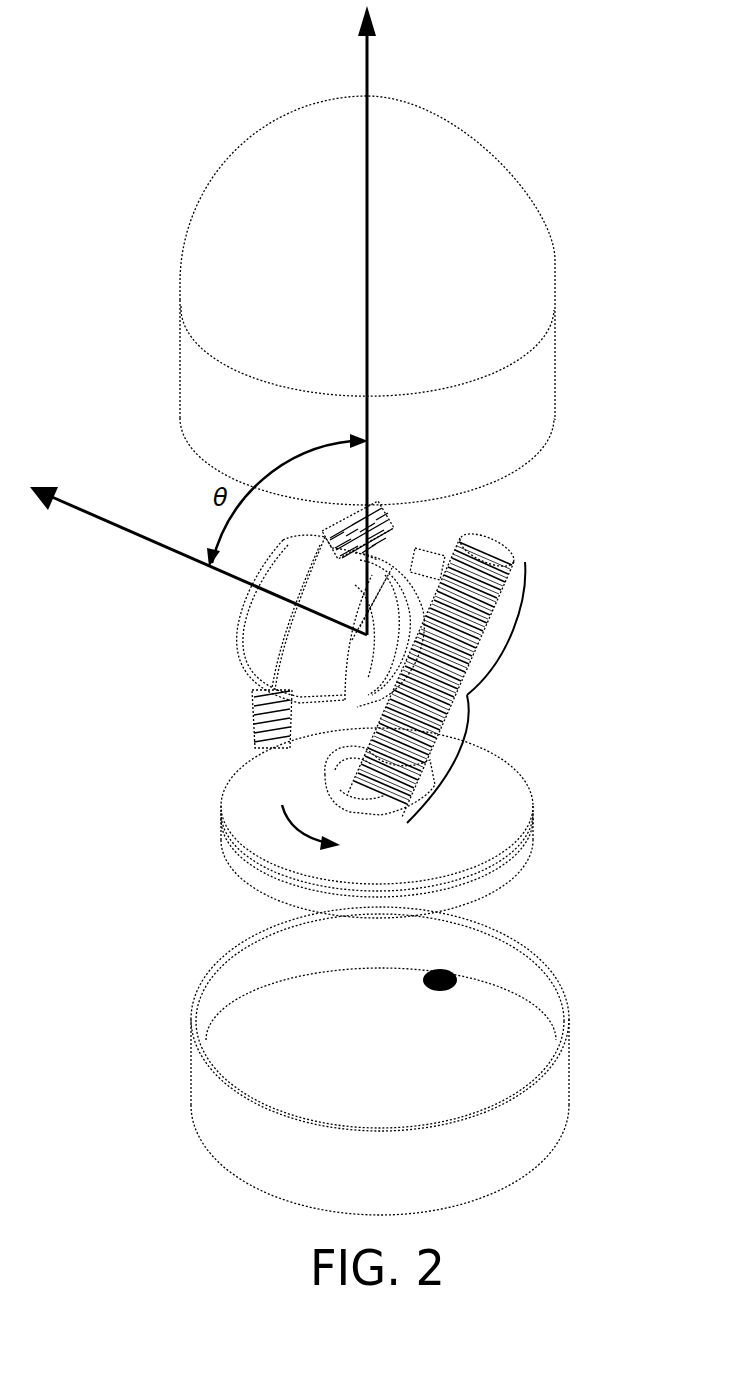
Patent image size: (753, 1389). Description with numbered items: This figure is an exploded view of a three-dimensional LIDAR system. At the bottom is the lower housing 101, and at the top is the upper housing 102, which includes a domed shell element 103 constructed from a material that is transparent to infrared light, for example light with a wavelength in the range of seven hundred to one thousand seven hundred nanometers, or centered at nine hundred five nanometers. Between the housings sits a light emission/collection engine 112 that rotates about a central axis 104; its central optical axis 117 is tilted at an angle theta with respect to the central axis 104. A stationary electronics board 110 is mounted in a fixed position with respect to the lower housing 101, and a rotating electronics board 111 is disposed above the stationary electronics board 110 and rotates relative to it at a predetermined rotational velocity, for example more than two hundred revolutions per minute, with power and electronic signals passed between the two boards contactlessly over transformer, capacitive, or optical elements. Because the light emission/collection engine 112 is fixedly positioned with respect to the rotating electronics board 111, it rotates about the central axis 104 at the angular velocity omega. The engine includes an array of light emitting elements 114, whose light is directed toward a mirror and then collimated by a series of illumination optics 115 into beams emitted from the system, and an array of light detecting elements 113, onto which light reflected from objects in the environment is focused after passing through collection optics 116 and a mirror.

The lower housing 101 is at (565, 1081).
The upper housing 102 is at (436, 300).
The domed shell element 103 is at (277, 230).
The central axis 104 is at (369, 68).
The stationary electronics board 110 is at (220, 844).
The rotating electronics board 111 is at (220, 792).
The light emission/collection engine 112 is at (580, 515).
The array of light detecting elements 113 is at (467, 696).
The array of light emitting elements 114 is at (253, 714).
The illumination optics 115 is at (240, 626).
The collection optics 116 is at (328, 656).
The central optical axis 117 is at (96, 525).